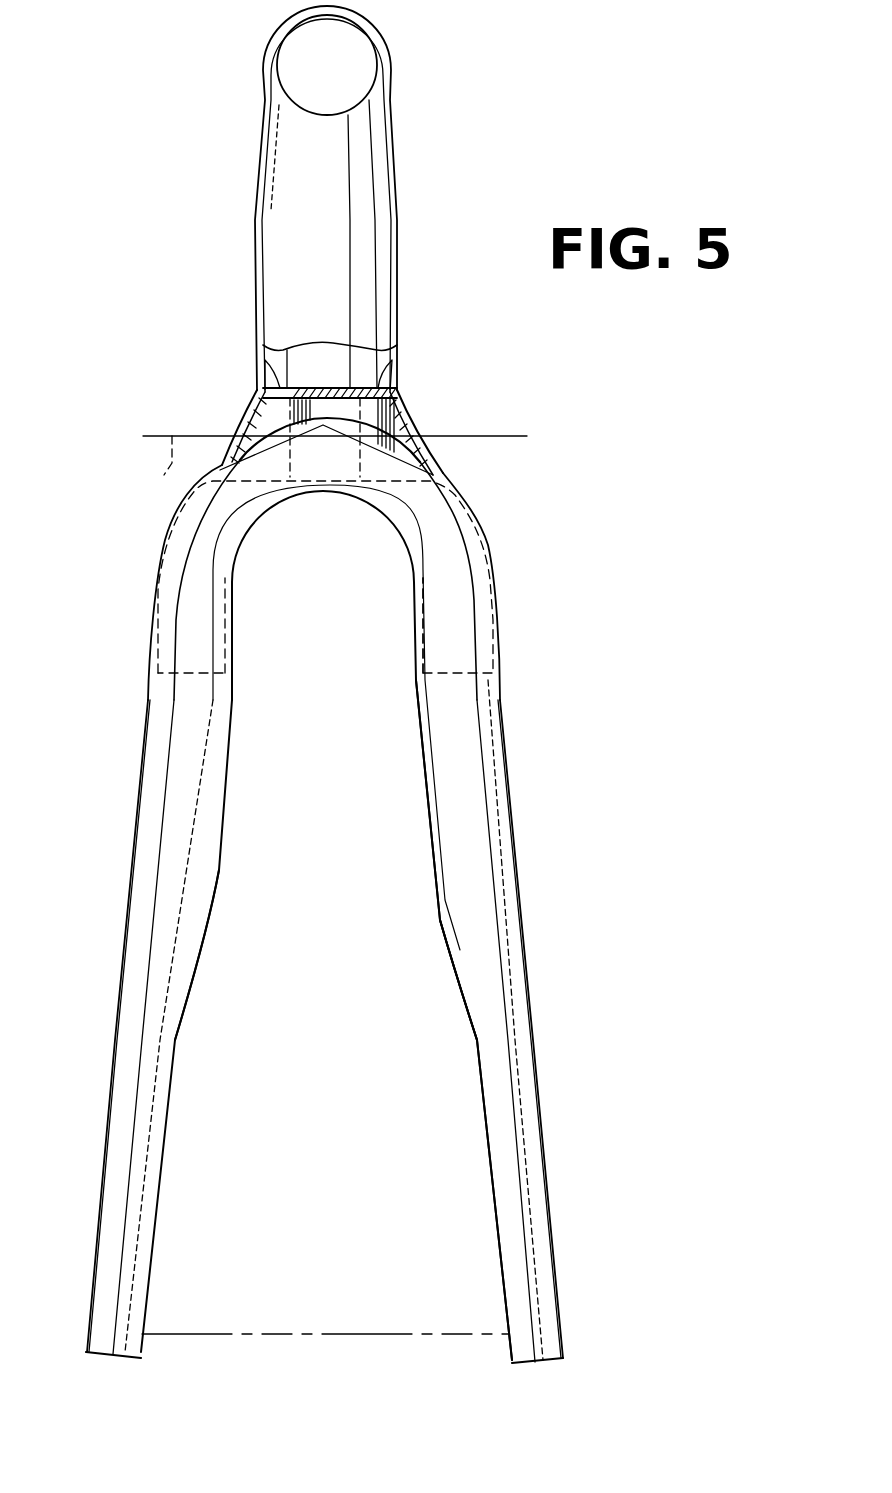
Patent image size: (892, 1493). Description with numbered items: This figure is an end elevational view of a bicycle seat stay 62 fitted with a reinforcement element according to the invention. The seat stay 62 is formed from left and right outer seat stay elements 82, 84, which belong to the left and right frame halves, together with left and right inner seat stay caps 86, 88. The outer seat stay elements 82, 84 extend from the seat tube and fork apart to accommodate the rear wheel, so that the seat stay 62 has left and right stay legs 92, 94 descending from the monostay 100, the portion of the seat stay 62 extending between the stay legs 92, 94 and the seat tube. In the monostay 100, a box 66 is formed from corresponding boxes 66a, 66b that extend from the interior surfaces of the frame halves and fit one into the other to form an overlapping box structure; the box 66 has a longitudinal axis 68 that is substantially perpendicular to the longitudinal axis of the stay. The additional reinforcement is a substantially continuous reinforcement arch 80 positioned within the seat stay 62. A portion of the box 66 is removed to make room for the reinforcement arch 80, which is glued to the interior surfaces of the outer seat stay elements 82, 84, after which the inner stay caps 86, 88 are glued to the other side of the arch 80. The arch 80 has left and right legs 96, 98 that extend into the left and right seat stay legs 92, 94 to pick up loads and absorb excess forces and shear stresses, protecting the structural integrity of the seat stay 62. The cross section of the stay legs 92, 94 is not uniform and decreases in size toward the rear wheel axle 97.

The monostay 100 is at (387, 183).
The seat stay 62 is at (512, 614).
The reinforcement arch 80 is at (464, 500).
The box 66 is at (322, 380).
The corresponding box 66a is at (270, 374).
The corresponding box 66b is at (383, 382).
The longitudinal axis 68 is at (158, 478).
The left outer seat stay element 82 is at (294, 922).
The right outer seat stay element 84 is at (467, 970).
The left inner seat stay cap 86 is at (217, 787).
The right inner seat stay cap 88 is at (422, 805).
The left stay leg 92 is at (212, 940).
The right stay leg 94 is at (438, 948).
The left leg of arch 96 is at (213, 619).
The right leg of arch 98 is at (433, 618).
The rear wheel axle 97 is at (295, 1332).